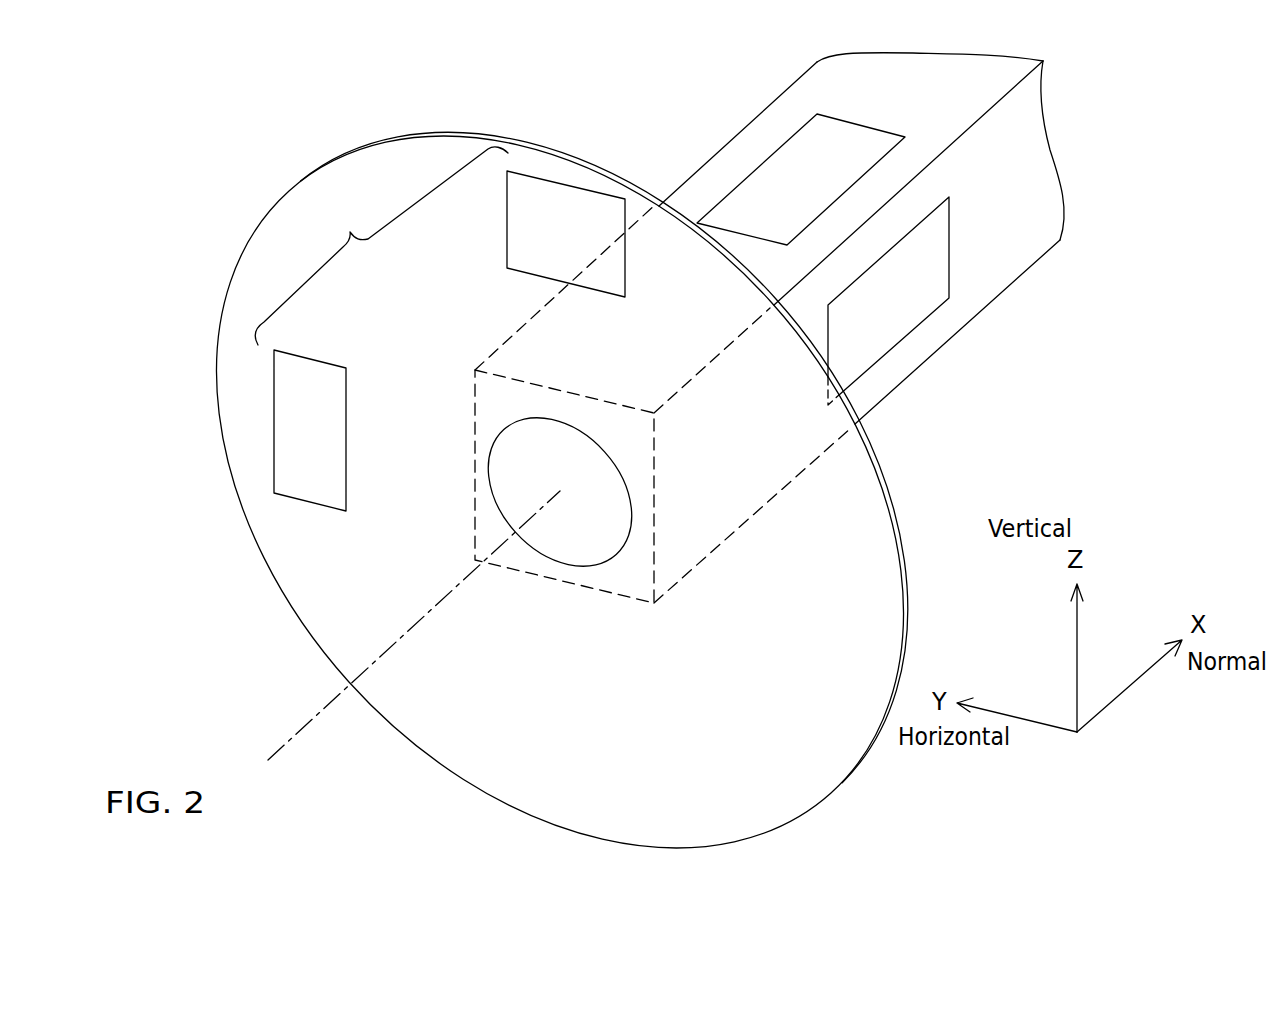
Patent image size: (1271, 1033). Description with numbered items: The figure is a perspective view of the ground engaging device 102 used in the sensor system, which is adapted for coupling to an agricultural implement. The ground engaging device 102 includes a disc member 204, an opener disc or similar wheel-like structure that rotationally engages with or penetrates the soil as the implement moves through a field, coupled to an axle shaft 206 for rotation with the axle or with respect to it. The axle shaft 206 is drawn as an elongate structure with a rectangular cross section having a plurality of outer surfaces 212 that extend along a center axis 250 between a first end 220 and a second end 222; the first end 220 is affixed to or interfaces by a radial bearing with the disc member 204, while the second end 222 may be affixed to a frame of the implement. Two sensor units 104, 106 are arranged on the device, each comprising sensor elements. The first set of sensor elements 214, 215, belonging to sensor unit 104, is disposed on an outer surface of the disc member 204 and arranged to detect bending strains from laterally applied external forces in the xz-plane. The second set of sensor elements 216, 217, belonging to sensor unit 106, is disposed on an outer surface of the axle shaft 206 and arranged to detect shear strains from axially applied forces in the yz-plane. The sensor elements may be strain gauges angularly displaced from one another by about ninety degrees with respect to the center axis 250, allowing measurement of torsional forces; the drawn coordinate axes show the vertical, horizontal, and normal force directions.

The ground engaging device 102 is at (345, 112).
The sensor unit 104 is at (381, 246).
The sensor unit 106 is at (893, 108).
The disc member 204 is at (228, 293).
The axle shaft 206 is at (752, 118).
The outer surfaces 212 is at (852, 90).
The sensor element 214 is at (330, 441).
The sensor element 215 is at (580, 244).
The sensor element 216 is at (820, 192).
The sensor element 217 is at (913, 312).
The first end 220 is at (627, 573).
The second end 222 is at (1047, 148).
The center axis 250 is at (304, 719).